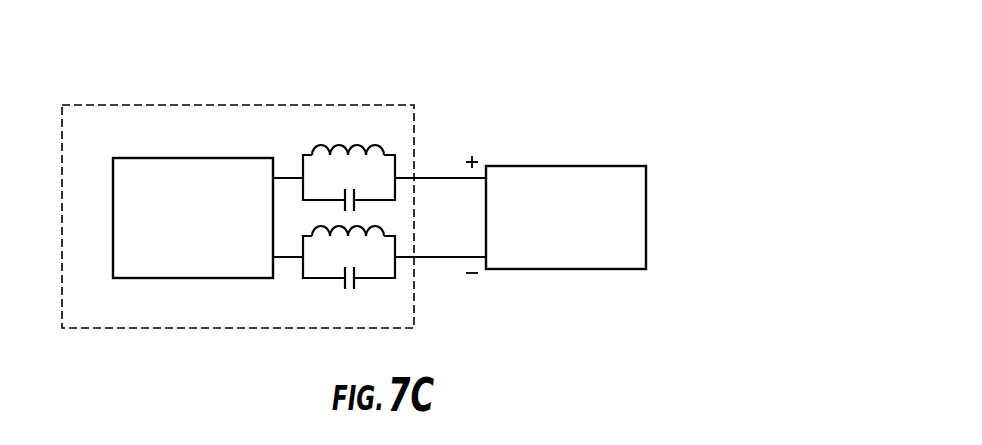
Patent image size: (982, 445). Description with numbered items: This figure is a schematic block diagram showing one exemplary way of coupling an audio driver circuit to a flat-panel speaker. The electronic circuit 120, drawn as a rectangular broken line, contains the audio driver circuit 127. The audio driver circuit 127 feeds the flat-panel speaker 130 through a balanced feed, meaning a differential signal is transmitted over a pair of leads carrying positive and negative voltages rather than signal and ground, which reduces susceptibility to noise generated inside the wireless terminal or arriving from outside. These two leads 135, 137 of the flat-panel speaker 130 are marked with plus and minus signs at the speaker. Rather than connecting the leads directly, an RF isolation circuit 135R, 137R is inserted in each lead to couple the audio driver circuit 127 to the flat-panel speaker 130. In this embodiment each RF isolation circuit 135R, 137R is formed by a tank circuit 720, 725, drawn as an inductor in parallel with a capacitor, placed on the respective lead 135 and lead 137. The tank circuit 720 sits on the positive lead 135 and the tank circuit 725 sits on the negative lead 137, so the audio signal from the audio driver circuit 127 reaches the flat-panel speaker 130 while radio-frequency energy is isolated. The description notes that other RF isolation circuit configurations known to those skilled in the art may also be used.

The electronic circuit 120 is at (248, 120).
The audio driver circuit 127 is at (178, 158).
The tank circuit 720 is at (395, 163).
The RF isolation circuit 135R is at (361, 147).
The tank circuit 725 is at (396, 269).
The RF isolation circuit 137R is at (318, 279).
The lead 135 is at (452, 176).
The lead 137 is at (447, 259).
The flat-panel speaker 130 is at (634, 209).